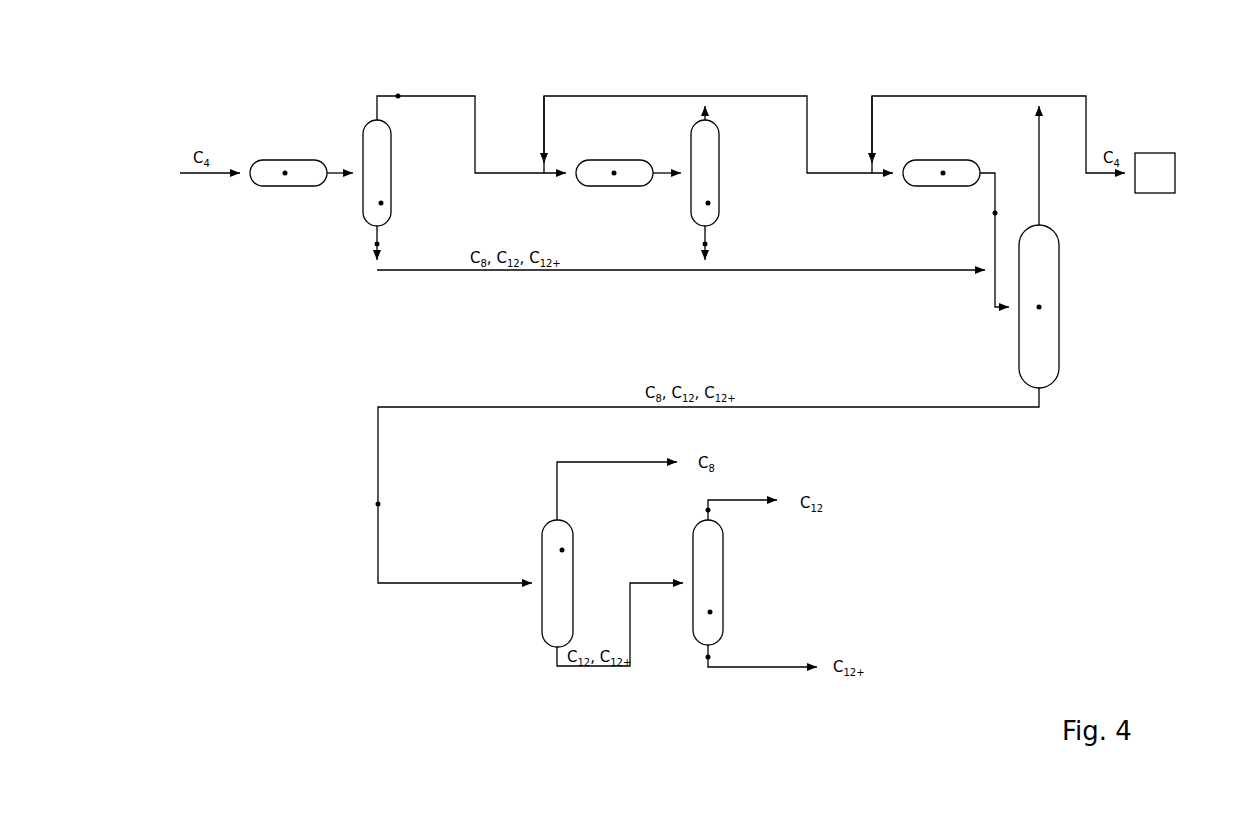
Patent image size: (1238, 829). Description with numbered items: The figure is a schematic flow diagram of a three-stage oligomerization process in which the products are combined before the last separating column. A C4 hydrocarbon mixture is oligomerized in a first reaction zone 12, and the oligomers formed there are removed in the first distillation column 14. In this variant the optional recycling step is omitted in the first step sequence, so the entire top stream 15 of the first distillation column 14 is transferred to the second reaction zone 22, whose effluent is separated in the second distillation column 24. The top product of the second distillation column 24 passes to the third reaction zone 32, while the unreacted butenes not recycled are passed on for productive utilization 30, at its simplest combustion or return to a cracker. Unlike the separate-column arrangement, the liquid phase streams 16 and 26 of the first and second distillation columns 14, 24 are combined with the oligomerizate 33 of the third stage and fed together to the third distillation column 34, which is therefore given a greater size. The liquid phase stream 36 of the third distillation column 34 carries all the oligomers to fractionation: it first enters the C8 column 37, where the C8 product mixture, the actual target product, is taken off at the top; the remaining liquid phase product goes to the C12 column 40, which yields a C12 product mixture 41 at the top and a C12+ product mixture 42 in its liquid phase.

The reaction zone 12 is at (282, 175).
The first distillation column 14 is at (384, 203).
The top stream of the first distillation column 15 is at (398, 96).
The liquid phase stream of the first distillation column 16 is at (374, 244).
The reaction zone 22 is at (610, 173).
The second distillation column 24 is at (711, 203).
The liquid phase stream of the second distillation column 26 is at (702, 244).
The productive utilization 30 is at (1155, 173).
The reaction zone 32 is at (939, 173).
The oligomerizate of the third stage 33 is at (992, 213).
The third distillation column 34 is at (1042, 307).
The liquid phase stream of the third distillation column 36 is at (375, 504).
The C8 column 37 is at (565, 550).
The C12 column 40 is at (713, 612).
The C12 product mixture 41 is at (705, 510).
The C12+ product mixture 42 is at (705, 657).